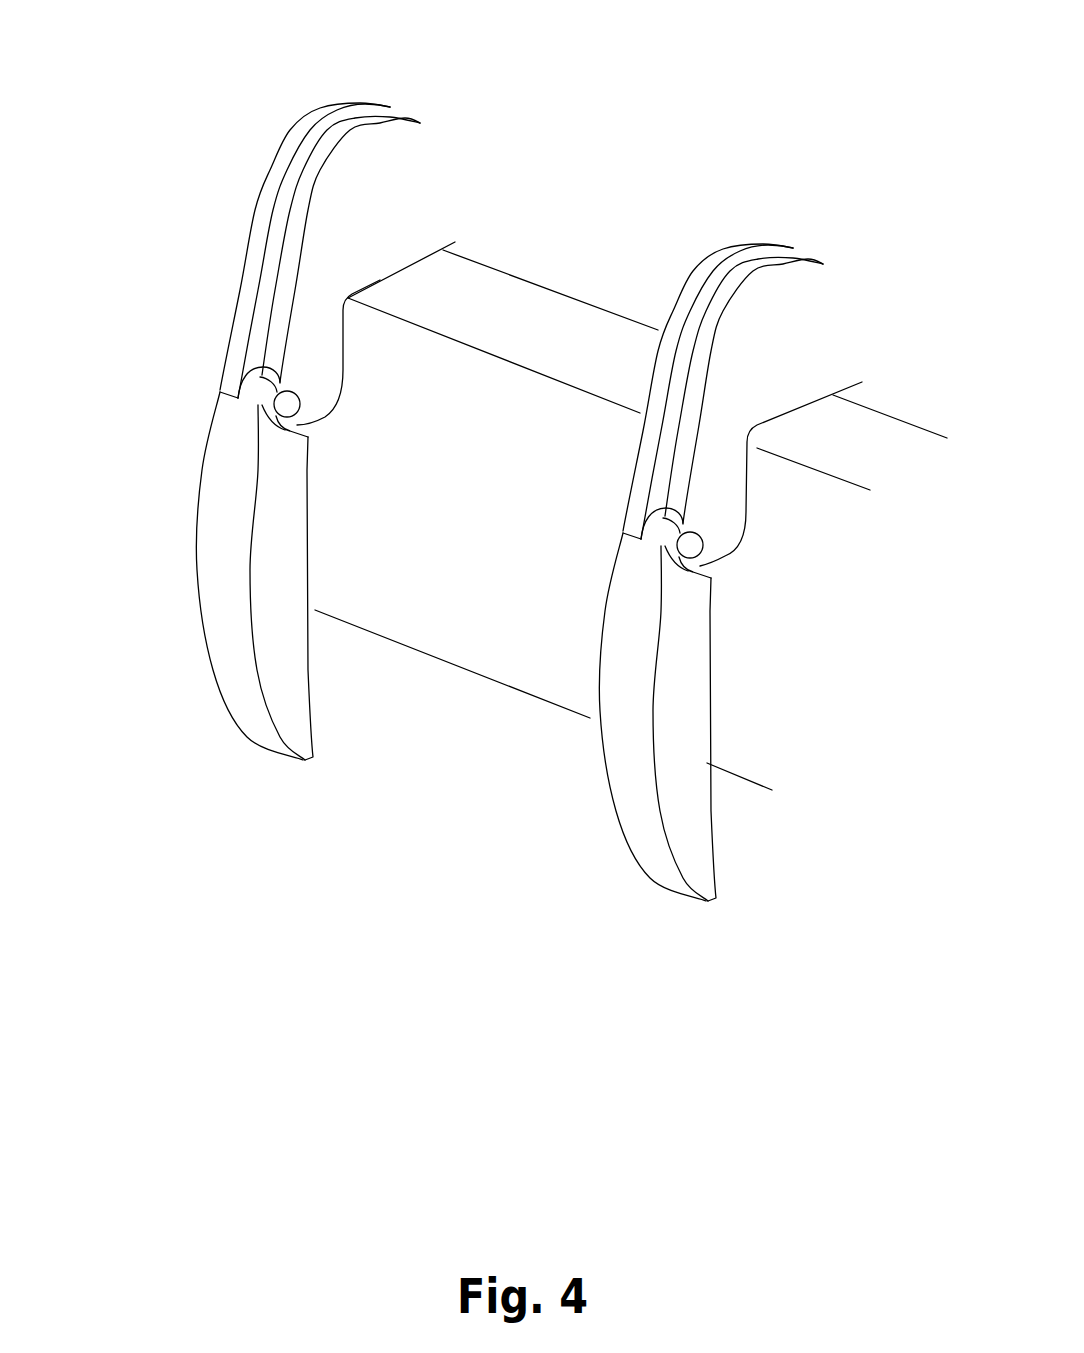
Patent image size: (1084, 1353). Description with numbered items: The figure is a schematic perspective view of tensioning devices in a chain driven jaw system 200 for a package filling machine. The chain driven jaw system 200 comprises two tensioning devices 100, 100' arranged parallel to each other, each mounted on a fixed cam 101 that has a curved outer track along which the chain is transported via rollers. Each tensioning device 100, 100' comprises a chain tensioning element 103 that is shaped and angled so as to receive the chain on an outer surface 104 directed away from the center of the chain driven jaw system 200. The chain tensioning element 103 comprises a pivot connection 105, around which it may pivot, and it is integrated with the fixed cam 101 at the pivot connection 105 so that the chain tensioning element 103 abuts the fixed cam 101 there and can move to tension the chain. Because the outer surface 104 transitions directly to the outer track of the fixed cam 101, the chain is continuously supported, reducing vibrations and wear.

The chain driven jaw system 200 is at (195, 43).
The tensioning device 100 is at (236, 431).
The tensioning device 100' is at (630, 572).
The fixed cam 101 is at (253, 210).
The chain tensioning element 103 is at (197, 522).
The outer surface 104 is at (220, 637).
The pivot connection 105 is at (290, 406).